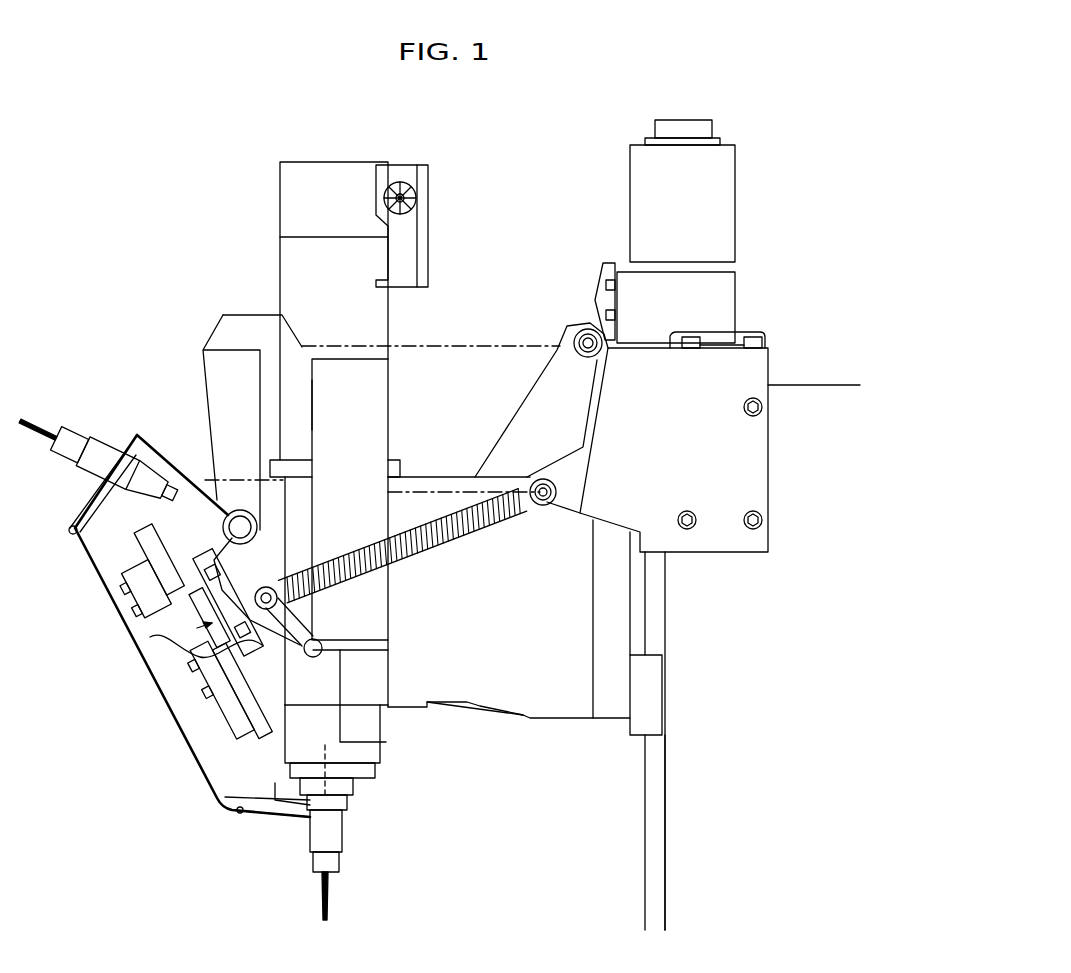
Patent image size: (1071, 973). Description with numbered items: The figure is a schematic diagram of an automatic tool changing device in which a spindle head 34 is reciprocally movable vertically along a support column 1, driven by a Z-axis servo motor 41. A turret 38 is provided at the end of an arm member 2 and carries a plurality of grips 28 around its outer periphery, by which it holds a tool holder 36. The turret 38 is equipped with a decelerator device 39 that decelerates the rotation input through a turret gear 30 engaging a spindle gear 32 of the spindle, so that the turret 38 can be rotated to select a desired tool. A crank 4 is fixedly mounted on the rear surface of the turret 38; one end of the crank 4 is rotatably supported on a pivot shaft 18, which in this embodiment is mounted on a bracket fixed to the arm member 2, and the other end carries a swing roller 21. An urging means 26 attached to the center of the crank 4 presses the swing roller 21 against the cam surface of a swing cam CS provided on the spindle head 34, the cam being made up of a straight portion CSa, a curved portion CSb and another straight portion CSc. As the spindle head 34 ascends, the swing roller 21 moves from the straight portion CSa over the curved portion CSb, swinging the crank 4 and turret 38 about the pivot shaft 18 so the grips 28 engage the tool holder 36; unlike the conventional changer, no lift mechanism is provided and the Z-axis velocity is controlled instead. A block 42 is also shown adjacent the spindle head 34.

The support column 1 is at (658, 813).
The arm member 2 is at (500, 345).
The crank 4 is at (165, 672).
The pivot shaft 18 is at (232, 515).
The swing roller 21 is at (340, 655).
The urging means 26 is at (447, 562).
The grips 28 is at (100, 547).
The turret gear 30 is at (200, 748).
The spindle gear 32 is at (275, 783).
The spindle head 34 is at (503, 702).
The tool holder 36 is at (96, 442).
The turret 38 is at (128, 600).
The decelerator device 39 is at (150, 637).
The Z-axis servo motor 41 is at (727, 208).
The block 42 is at (208, 380).
The swing cam CS is at (318, 378).
The straight portion CSa is at (310, 403).
The curved portion CSb is at (313, 622).
The straight portion CSc is at (335, 700).